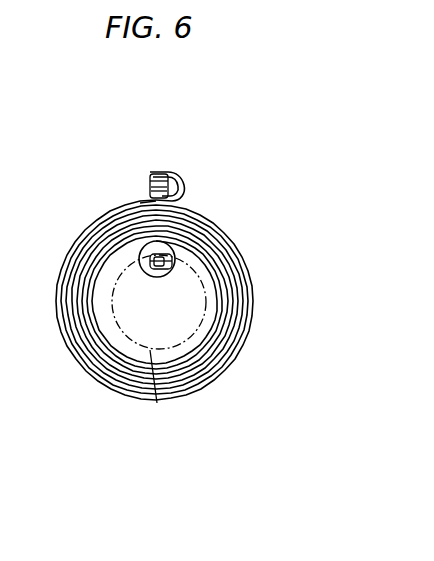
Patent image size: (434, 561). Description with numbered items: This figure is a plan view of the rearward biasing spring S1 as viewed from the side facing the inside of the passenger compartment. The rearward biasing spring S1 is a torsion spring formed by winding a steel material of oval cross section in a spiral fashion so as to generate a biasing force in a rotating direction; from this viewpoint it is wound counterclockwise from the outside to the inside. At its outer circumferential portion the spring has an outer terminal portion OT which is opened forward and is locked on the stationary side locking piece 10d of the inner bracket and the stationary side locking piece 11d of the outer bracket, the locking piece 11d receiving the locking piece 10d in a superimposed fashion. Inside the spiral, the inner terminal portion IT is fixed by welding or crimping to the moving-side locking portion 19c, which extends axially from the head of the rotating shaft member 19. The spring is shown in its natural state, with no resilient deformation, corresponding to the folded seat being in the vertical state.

The stationary side locking piece 10d is at (162, 172).
The stationary side locking piece 11d is at (140, 203).
The rearward biasing spring S1 is at (206, 227).
The outer terminal portion OT is at (180, 173).
The inner terminal portion IT is at (166, 274).
The rotating shaft member 19 is at (157, 403).
The moving-side locking portion 19c is at (236, 251).